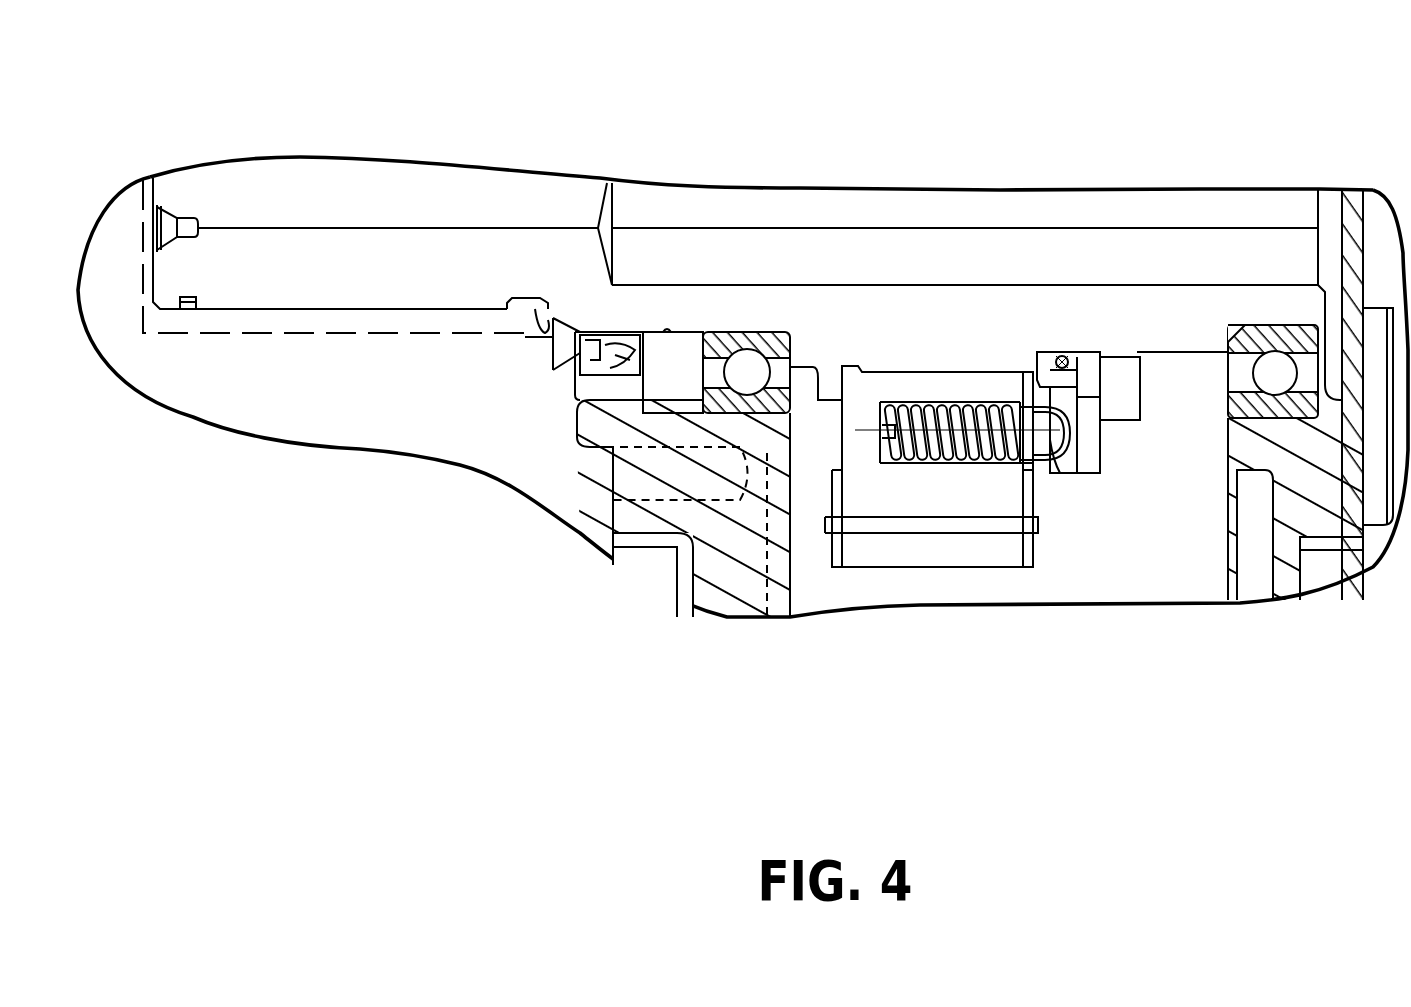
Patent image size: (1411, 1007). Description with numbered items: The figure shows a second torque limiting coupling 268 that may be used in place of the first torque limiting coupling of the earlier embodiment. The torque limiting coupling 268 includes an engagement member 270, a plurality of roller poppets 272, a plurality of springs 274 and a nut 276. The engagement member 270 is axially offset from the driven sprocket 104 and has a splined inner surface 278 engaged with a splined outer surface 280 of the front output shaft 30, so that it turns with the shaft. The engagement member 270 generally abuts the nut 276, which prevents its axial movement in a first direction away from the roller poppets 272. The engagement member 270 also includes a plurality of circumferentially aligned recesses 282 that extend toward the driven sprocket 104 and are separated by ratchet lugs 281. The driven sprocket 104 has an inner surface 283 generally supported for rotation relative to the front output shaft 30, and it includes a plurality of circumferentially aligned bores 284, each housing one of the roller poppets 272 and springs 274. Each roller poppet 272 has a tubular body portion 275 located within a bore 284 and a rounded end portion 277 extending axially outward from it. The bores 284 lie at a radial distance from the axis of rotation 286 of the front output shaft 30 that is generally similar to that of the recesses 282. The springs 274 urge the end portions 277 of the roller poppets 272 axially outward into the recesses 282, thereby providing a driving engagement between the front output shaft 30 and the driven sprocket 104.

The front output shaft 30 is at (340, 190).
The driven sprocket 104 is at (867, 500).
The torque limiting coupling 268 is at (1153, 493).
The engagement member 270 is at (1090, 430).
The roller poppet 272 is at (998, 460).
The spring 274 is at (930, 453).
The tubular body portion 275 is at (963, 460).
The nut 276 is at (1122, 357).
The rounded end portion 277 is at (1063, 398).
The splined inner surface 278 is at (1062, 356).
The splined outer surface 280 is at (1089, 368).
The ratchet lug 281 is at (1075, 397).
The recess 282 is at (1092, 430).
The inner surface 283 is at (920, 372).
The bore 284 is at (887, 408).
The axis of rotation 286 is at (233, 230).